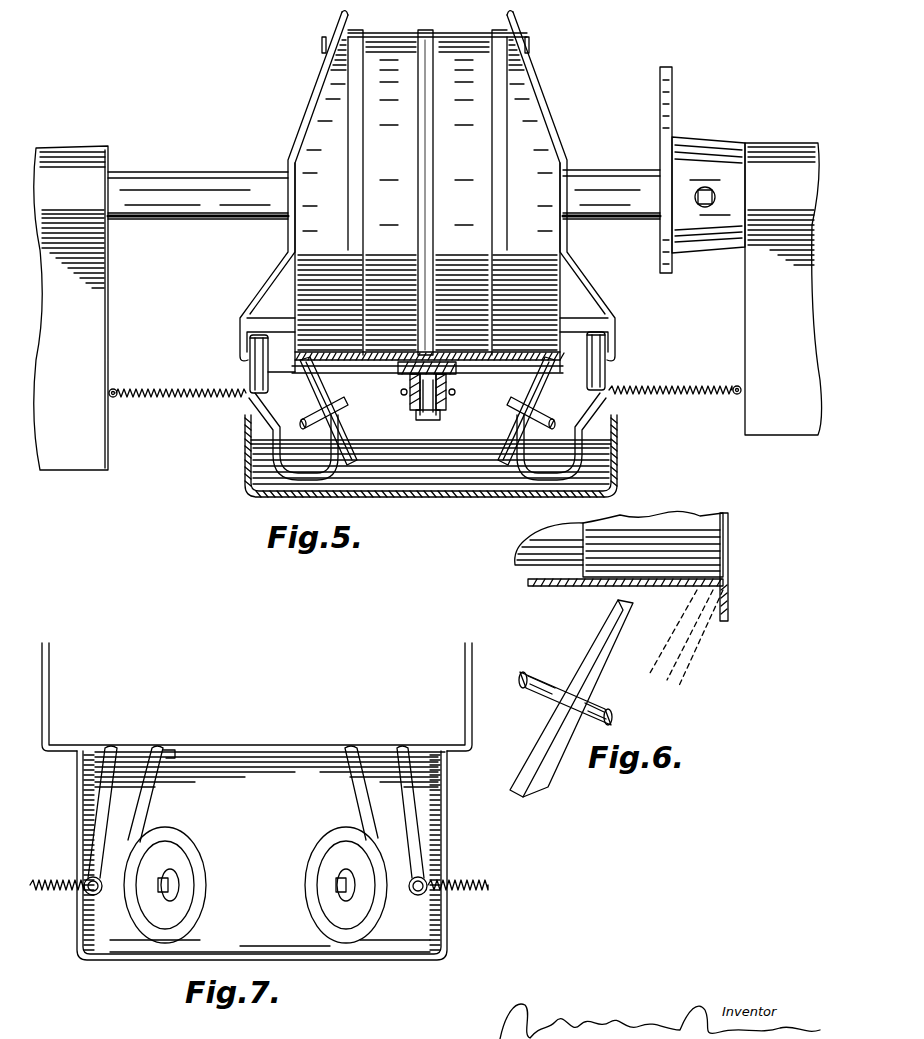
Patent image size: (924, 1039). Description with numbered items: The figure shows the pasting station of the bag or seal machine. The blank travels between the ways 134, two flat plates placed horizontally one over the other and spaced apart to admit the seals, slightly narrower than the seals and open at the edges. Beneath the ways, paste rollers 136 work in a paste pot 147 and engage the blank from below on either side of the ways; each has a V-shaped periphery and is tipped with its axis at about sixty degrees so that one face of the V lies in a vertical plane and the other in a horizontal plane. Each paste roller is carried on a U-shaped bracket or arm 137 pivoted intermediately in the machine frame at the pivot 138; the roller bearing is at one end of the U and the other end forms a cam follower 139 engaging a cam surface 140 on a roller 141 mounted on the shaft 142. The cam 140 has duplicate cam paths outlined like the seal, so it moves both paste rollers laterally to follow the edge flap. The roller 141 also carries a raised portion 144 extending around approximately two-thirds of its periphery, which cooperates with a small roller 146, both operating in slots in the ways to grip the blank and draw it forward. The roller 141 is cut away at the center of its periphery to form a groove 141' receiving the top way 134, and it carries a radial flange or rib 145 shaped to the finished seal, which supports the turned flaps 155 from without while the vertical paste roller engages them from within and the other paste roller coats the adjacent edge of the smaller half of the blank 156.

In FIG. 5, the ways 134 is at (387, 350).
In FIG. 5, the paste rollers 136 is at (386, 392).
In FIG. 6, the paste rollers 136 is at (595, 690).
In FIG. 7, the paste rollers 136 is at (193, 862).
In FIG. 5, the U-shaped bracket or arm 137 is at (257, 407).
In FIG. 6, the U-shaped bracket or arm 137 is at (545, 668).
In FIG. 7, the U-shaped bracket or arm 137 is at (157, 790).
In FIG. 7, the pivot 138 is at (163, 755).
In FIG. 5, the cam follower 139 is at (248, 365).
In FIG. 7, the cam follower 139 is at (102, 878).
In FIG. 5, the cam surface 140 is at (536, 75).
In FIG. 5, the roller 141 is at (397, 201).
In FIG. 6, the roller 141 is at (653, 532).
In FIG. 6, the groove 141' is at (514, 555).
In FIG. 5, the shaft 142 is at (158, 185).
In FIG. 5, the raised portion 144 is at (430, 182).
In FIG. 5, the radial flange or rib 145 is at (348, 18).
In FIG. 5, the small roller 146 is at (440, 413).
In FIG. 5, the paste pot 147 is at (243, 432).
In FIG. 7, the paste pot 147 is at (218, 955).
In FIG. 5, the flaps 155 is at (292, 373).
In FIG. 6, the flaps 155 is at (728, 600).
In FIG. 5, the smaller half of the blank 156 is at (346, 405).
In FIG. 6, the smaller half of the blank 156 is at (553, 587).